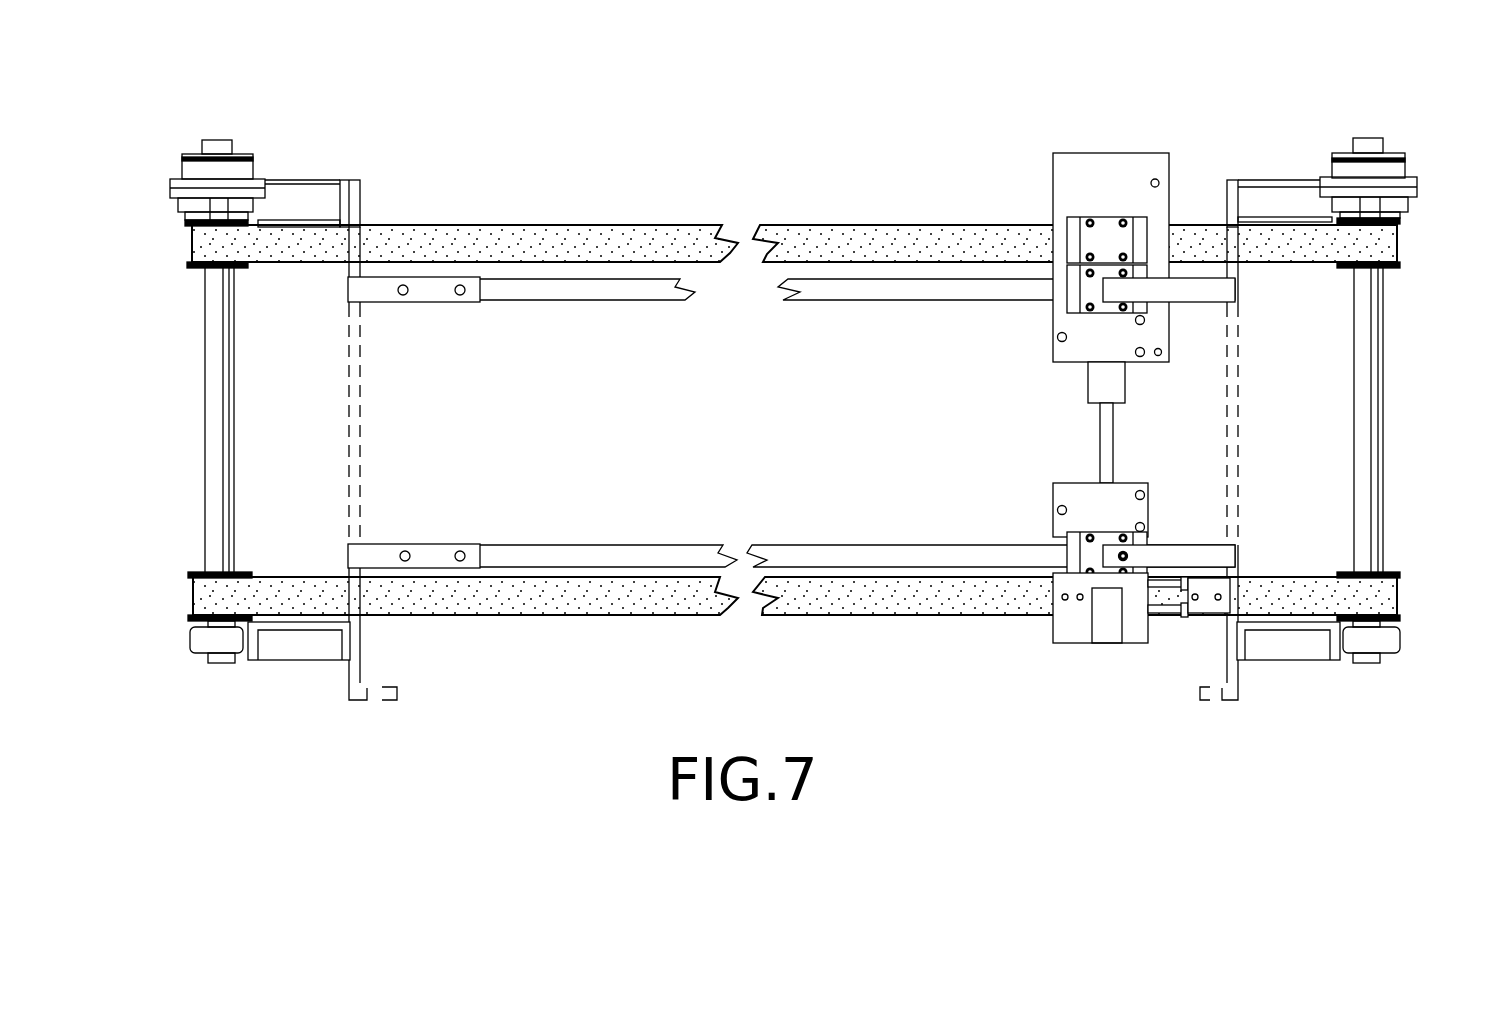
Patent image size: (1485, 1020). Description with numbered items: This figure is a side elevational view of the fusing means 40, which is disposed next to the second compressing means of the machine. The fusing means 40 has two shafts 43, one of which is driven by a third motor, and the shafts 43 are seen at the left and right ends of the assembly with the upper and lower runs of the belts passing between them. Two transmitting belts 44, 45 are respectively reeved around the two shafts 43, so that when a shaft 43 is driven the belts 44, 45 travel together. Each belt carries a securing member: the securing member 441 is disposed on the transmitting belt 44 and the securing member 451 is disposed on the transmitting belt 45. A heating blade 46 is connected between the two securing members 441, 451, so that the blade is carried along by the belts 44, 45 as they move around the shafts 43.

The fusing means 40 is at (793, 417).
The shafts 43 is at (1410, 420).
The transmitting belt 44 is at (792, 178).
The transmitting belt 45 is at (794, 640).
The securing member 441 is at (1089, 275).
The securing member 451 is at (1144, 542).
The heating blade 46 is at (1045, 422).